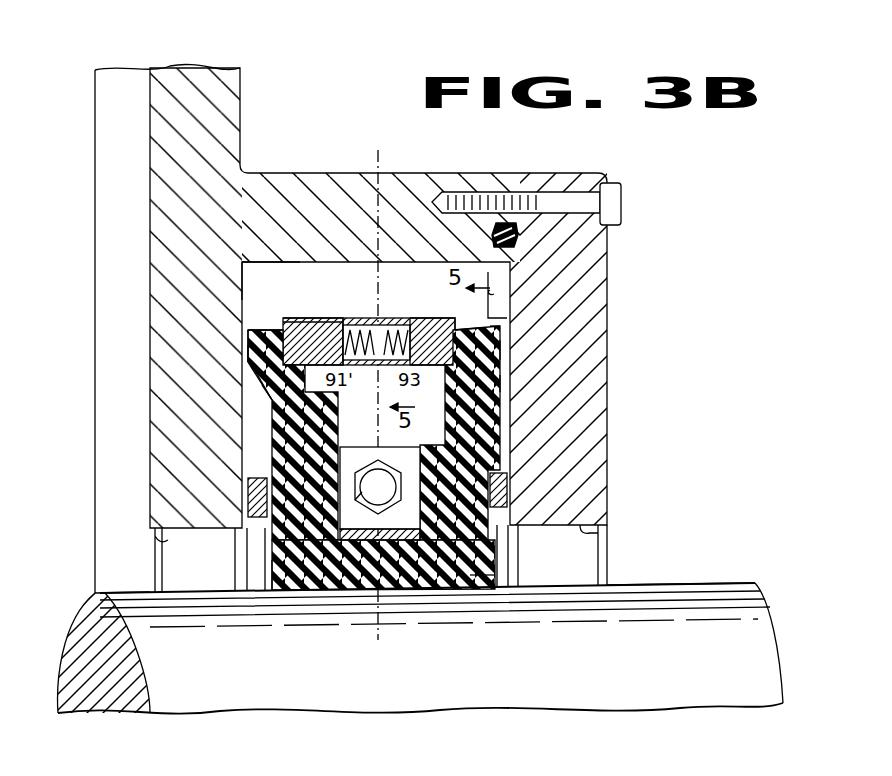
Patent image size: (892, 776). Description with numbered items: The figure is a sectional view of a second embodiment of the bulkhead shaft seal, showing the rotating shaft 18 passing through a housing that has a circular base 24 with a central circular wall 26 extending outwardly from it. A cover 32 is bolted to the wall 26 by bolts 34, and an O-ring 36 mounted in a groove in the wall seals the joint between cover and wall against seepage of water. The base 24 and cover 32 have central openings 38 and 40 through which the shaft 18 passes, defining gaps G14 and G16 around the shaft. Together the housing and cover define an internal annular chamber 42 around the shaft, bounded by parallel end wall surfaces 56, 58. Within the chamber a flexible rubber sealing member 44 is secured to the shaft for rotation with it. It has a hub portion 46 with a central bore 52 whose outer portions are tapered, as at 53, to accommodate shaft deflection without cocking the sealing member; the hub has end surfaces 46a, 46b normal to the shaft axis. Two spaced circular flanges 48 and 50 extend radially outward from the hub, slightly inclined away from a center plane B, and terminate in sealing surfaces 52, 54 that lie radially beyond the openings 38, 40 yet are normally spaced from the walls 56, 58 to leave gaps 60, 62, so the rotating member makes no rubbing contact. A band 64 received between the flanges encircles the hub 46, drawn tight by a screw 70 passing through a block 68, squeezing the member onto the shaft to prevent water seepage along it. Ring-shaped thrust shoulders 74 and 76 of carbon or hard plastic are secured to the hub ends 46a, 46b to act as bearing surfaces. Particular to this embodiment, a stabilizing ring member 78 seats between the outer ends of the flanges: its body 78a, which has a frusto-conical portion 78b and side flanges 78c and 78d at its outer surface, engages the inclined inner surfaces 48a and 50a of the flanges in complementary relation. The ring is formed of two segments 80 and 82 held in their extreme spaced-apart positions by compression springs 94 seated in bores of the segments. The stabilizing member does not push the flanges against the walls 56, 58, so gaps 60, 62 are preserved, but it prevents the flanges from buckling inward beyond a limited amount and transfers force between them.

The rotating shaft 18 is at (402, 697).
The circular base 24 is at (240, 96).
The central circular wall 26 is at (295, 192).
The cover 32 is at (607, 265).
The bolts 34 is at (623, 186).
The O-ring 36 is at (518, 240).
The central opening 38 is at (158, 537).
The central opening 40 is at (600, 528).
The internal annular chamber 42 is at (232, 288).
The sealing member 44 is at (255, 547).
The hub portion 46 is at (302, 585).
The end surface 46a is at (264, 578).
The end surface 46b is at (500, 570).
The circular flange 48 is at (275, 445).
The inclined inner surface 48a is at (268, 395).
The circular flange 50 is at (492, 412).
The inclined inner surface 50a is at (503, 383).
The central bore / sealing surface 52 is at (250, 354).
The tapered bore portion 53 is at (484, 590).
The sealing surface 54 is at (503, 350).
The end wall surface 56 is at (256, 263).
The end wall surface 58 is at (505, 290).
The gap 60 is at (250, 334).
The gap 62 is at (503, 335).
The band 64 is at (420, 590).
The block 68 is at (430, 453).
The screw 70 is at (365, 497).
The thrust shoulder 74 is at (250, 497).
The thrust shoulder 76 is at (507, 485).
The stabilizing ring member 78 is at (402, 312).
The body 78a is at (336, 310).
The frusto-conical portion 78b is at (260, 378).
The flange 78c is at (250, 322).
The flange 78d is at (482, 326).
The ring segment 80 is at (325, 292).
The ring segment 82 is at (430, 320).
The compression spring 94 is at (358, 325).
The center plane B is at (380, 153).
The gap G14 is at (162, 578).
The gap G16 is at (600, 566).